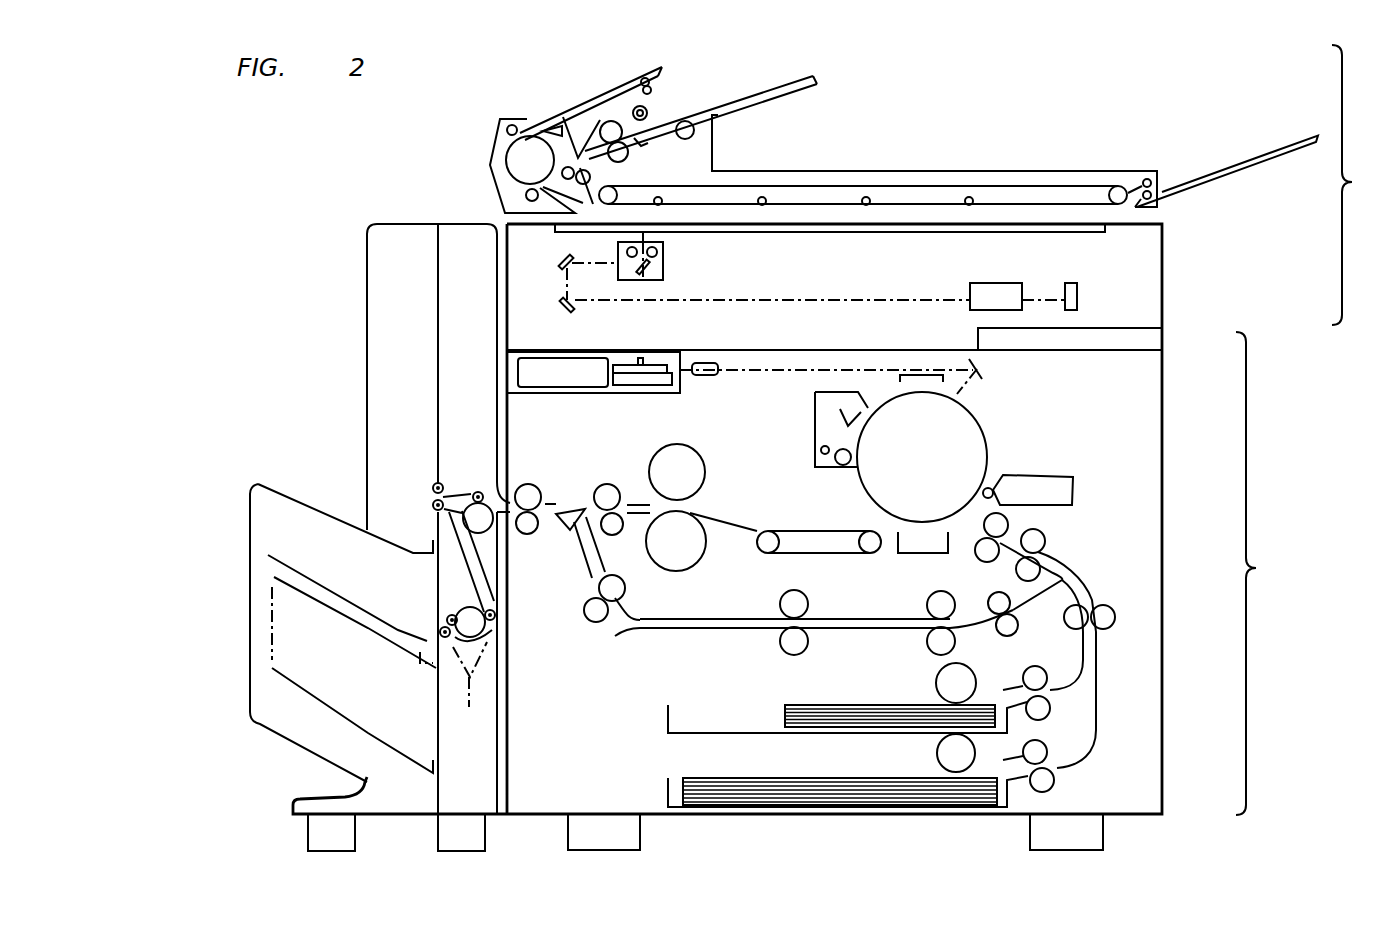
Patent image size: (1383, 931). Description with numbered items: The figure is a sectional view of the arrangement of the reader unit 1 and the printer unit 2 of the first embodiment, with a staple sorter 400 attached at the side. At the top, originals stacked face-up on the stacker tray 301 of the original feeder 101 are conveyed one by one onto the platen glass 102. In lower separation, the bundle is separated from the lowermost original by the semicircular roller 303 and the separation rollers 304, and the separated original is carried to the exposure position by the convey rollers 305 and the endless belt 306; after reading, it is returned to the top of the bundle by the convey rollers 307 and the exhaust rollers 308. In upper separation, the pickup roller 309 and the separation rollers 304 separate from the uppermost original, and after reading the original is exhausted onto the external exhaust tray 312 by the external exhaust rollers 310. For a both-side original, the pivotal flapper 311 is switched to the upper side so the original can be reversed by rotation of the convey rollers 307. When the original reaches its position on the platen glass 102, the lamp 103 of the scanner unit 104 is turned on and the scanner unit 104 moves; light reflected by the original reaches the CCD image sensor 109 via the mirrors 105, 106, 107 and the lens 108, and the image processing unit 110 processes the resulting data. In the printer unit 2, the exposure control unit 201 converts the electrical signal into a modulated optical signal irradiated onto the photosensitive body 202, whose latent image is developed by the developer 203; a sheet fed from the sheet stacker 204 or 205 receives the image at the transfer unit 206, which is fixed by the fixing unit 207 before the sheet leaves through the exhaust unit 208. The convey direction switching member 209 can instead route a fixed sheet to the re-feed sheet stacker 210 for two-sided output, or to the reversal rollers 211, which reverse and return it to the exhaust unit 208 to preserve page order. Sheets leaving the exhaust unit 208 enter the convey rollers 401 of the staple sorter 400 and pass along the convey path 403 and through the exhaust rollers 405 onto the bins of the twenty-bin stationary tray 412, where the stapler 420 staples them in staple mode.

The reader unit 1 is at (1352, 185).
The printer unit 2 is at (785, 537).
The original feeder 101 is at (1041, 170).
The platen glass 102 is at (903, 233).
The lamp 103 is at (666, 252).
The scanner unit 104 is at (665, 273).
The mirror 105 is at (648, 270).
The mirror 106 is at (558, 262).
The mirror 107 is at (563, 312).
The lens 108 is at (999, 284).
The CCD image sensor 109 is at (1073, 283).
The image processing unit 110 is at (1163, 338).
The exposure control unit 201 is at (627, 357).
The photosensitive body 202 is at (897, 410).
The developer 203 is at (1050, 478).
The sheet stacker 204 is at (1010, 728).
The sheet stacker 205 is at (1010, 804).
The transfer unit 206 is at (920, 545).
The fixing unit 207 is at (697, 557).
The exhaust unit 208 is at (530, 483).
The convey direction switching member 209 is at (557, 533).
The re-feed sheet stacker 210 is at (832, 629).
The reversal rollers 211 is at (596, 625).
The stacker tray 301 is at (817, 80).
The semicircular roller 303 is at (695, 131).
The separation rollers 304 is at (629, 154).
The convey rollers 305 is at (604, 127).
The endless belt 306 is at (929, 185).
The convey rollers 307 is at (512, 126).
The exhaust rollers 308 is at (641, 82).
The pickup roller 309 is at (648, 112).
The external exhaust rollers 310 is at (1160, 174).
The pivotal flapper 311 is at (553, 129).
The external exhaust tray 312 is at (1261, 155).
The staple sorter 400 is at (252, 512).
The convey rollers 401 is at (458, 497).
The convey path 403 is at (482, 578).
The exhaust rollers 405 is at (448, 608).
The stationary tray 412 is at (333, 593).
The stapler 420 is at (469, 707).